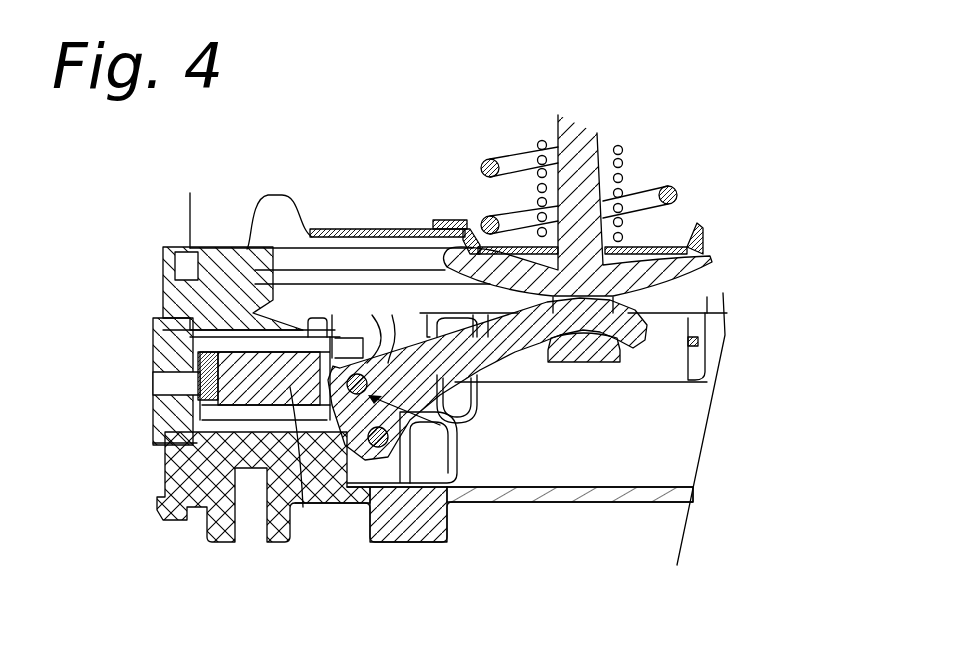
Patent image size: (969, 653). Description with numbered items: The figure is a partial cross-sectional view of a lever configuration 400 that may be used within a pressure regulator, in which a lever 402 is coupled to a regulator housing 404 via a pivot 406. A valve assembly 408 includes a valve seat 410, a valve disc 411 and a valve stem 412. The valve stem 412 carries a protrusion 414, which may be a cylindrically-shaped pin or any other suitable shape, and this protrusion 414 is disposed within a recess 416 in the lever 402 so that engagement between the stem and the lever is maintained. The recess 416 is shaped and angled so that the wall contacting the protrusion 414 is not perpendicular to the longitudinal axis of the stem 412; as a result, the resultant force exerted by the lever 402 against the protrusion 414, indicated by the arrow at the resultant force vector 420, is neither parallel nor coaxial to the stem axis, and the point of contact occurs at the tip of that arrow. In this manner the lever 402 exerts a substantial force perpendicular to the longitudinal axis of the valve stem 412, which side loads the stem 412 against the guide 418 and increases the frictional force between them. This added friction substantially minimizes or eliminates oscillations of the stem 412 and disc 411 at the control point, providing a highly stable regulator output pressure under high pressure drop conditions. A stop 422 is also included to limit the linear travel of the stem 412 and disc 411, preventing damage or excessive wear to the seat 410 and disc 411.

The lever configuration 400 is at (433, 148).
The lever 402 is at (507, 350).
The regulator housing 404 is at (627, 493).
The pivot 406 is at (427, 542).
The valve assembly 408 is at (219, 431).
The valve seat 410 is at (163, 418).
The valve disc 411 is at (200, 380).
The valve stem 412 is at (303, 507).
The protrusion 414 is at (352, 352).
The recess 416 is at (355, 372).
The guide 418 is at (268, 413).
The resultant force vector 420 is at (480, 503).
The stop 422 is at (337, 352).